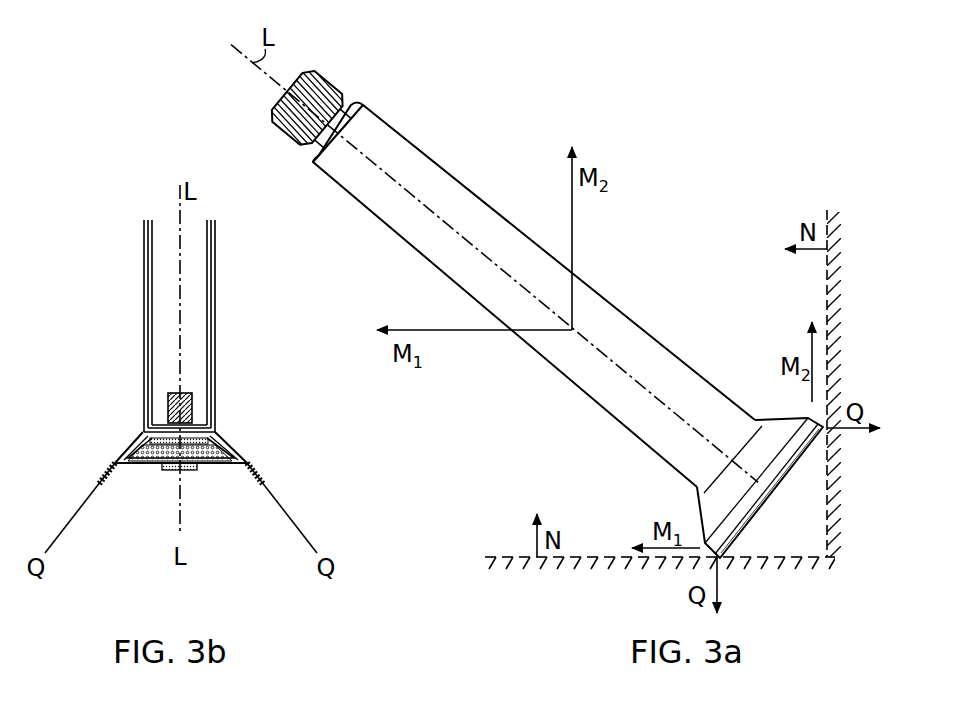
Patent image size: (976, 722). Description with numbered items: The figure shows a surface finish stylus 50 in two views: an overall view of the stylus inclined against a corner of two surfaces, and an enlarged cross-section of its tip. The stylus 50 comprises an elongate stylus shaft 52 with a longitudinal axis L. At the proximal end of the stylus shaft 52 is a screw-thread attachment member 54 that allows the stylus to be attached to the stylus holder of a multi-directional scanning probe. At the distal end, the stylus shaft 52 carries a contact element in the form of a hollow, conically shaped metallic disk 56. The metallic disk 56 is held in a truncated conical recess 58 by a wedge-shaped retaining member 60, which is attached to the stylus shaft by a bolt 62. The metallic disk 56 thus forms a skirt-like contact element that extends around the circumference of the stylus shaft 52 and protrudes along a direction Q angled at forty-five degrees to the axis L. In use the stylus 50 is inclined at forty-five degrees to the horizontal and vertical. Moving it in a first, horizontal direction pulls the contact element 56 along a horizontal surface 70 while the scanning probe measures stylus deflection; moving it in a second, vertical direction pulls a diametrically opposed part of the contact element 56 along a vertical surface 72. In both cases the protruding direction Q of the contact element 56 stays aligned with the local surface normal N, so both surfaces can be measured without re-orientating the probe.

In FIG. 3a, the surface finish stylus 50 is at (478, 124).
In FIG. 3a, the elongate stylus shaft 52 is at (500, 224).
In FIG. 3a, the screw-thread attachment member 54 is at (330, 92).
In FIG. 3a, the hollow, conically shaped metallic disk 56 is at (776, 478).
In FIG. 3b, the hollow, conically shaped metallic disk 56 is at (258, 479).
In FIG. 3b, the truncated conical recess 58 is at (228, 441).
In FIG. 3b, the wedge-shaped retaining member 60 is at (205, 468).
In FIG. 3b, the bolt 62 is at (188, 393).
In FIG. 3a, the horizontal surface 70 is at (776, 560).
In FIG. 3a, the vertical surface 72 is at (860, 383).